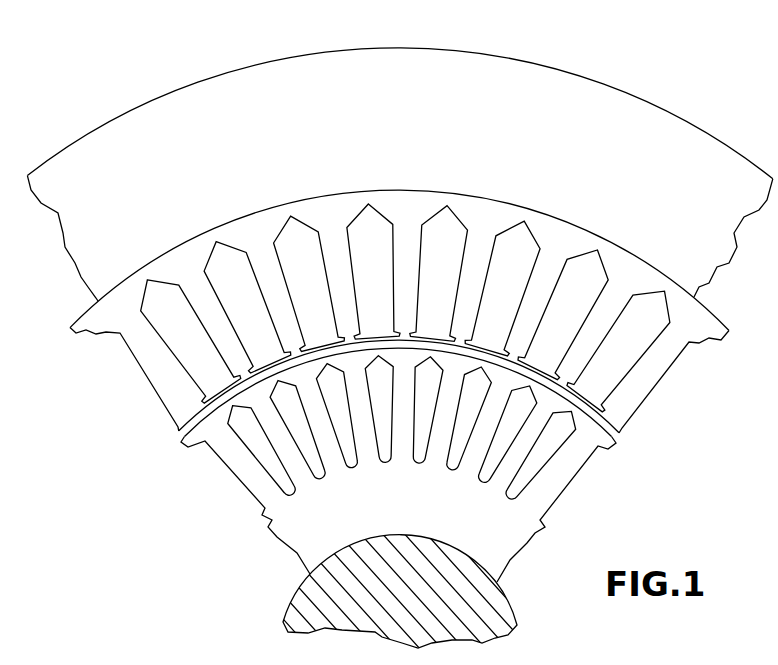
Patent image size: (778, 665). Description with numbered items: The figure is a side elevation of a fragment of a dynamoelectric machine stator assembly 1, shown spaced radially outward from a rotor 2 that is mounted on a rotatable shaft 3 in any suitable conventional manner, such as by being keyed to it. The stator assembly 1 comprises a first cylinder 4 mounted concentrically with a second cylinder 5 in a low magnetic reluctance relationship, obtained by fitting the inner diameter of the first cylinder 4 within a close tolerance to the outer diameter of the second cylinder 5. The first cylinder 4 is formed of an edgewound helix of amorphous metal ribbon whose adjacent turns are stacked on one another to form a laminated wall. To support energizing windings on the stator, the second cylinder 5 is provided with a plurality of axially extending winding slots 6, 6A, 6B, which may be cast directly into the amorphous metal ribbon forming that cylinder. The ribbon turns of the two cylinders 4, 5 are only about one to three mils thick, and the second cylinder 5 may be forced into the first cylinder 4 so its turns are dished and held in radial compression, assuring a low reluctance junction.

The stator assembly 1 is at (399, 334).
The rotor 2 is at (288, 527).
The rotatable shaft 3 is at (296, 598).
The first cylinder 4 is at (658, 125).
The second cylinder 5 is at (410, 317).
The winding slot 6 is at (181, 334).
The winding slot 6A is at (252, 306).
The winding slot 6B is at (316, 276).